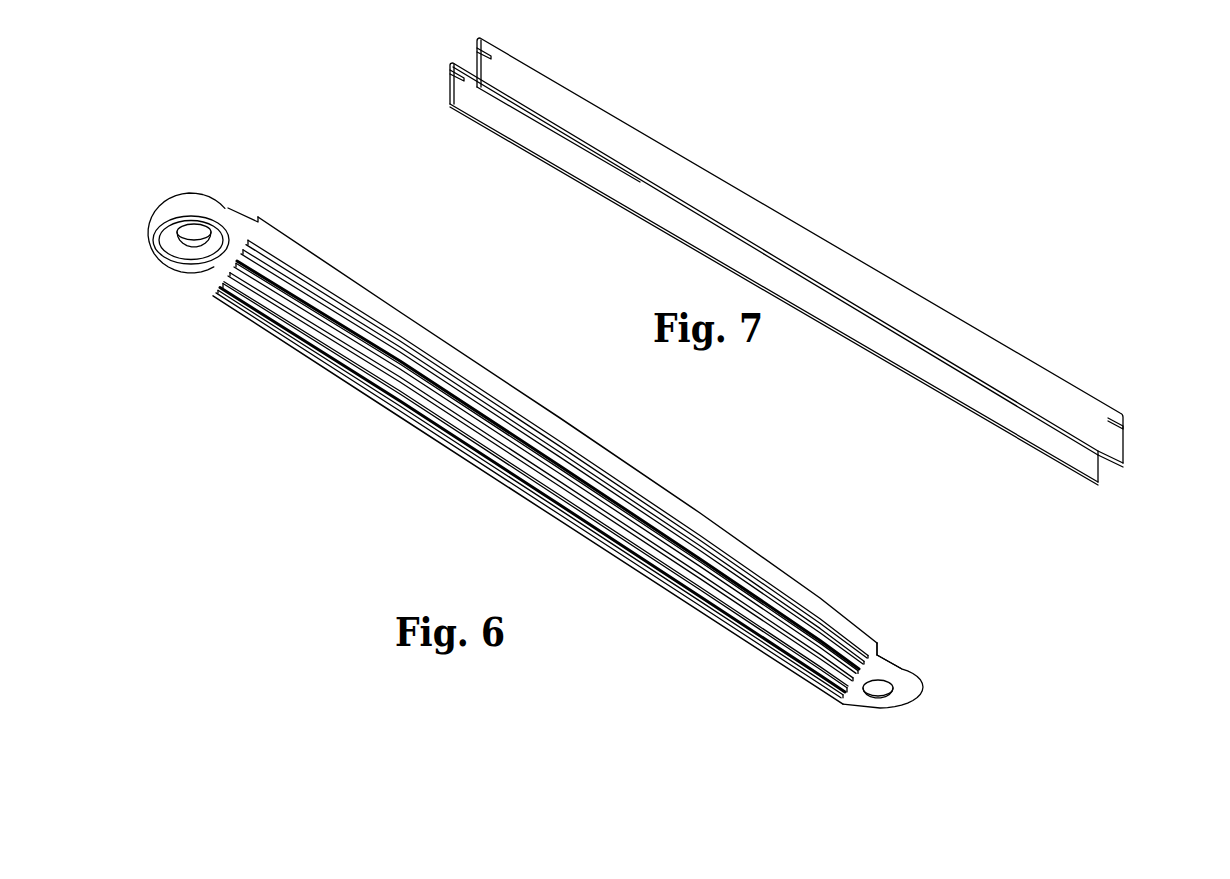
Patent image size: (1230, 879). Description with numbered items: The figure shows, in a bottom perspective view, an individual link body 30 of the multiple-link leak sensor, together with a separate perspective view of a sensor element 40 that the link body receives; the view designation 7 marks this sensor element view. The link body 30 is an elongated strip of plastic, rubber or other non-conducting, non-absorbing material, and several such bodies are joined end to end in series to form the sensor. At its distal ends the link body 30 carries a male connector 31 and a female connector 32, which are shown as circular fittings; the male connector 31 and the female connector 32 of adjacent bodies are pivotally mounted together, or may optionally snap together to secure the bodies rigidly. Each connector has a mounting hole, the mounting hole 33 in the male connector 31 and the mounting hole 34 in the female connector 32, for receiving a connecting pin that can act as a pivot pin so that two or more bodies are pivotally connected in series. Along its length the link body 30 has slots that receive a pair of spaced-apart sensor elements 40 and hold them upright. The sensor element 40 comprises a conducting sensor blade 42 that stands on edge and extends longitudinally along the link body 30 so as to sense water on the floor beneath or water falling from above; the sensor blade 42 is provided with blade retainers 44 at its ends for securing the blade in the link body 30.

In FIG. 6, the section line for Fig. 7 is at (903, 667).
In FIG. 6, the link body 30 is at (735, 494).
In FIG. 6, the male connector 31 is at (885, 670).
In FIG. 6, the female connector 32 is at (208, 208).
In FIG. 6, the mounting hole 33 is at (870, 698).
In FIG. 6, the mounting hole 34 is at (180, 236).
In FIG. 6, the sensor element 40 is at (487, 405).
In FIG. 7, the sensor blade 42 is at (785, 245).
In FIG. 7, the blade retainer 44 is at (462, 72).